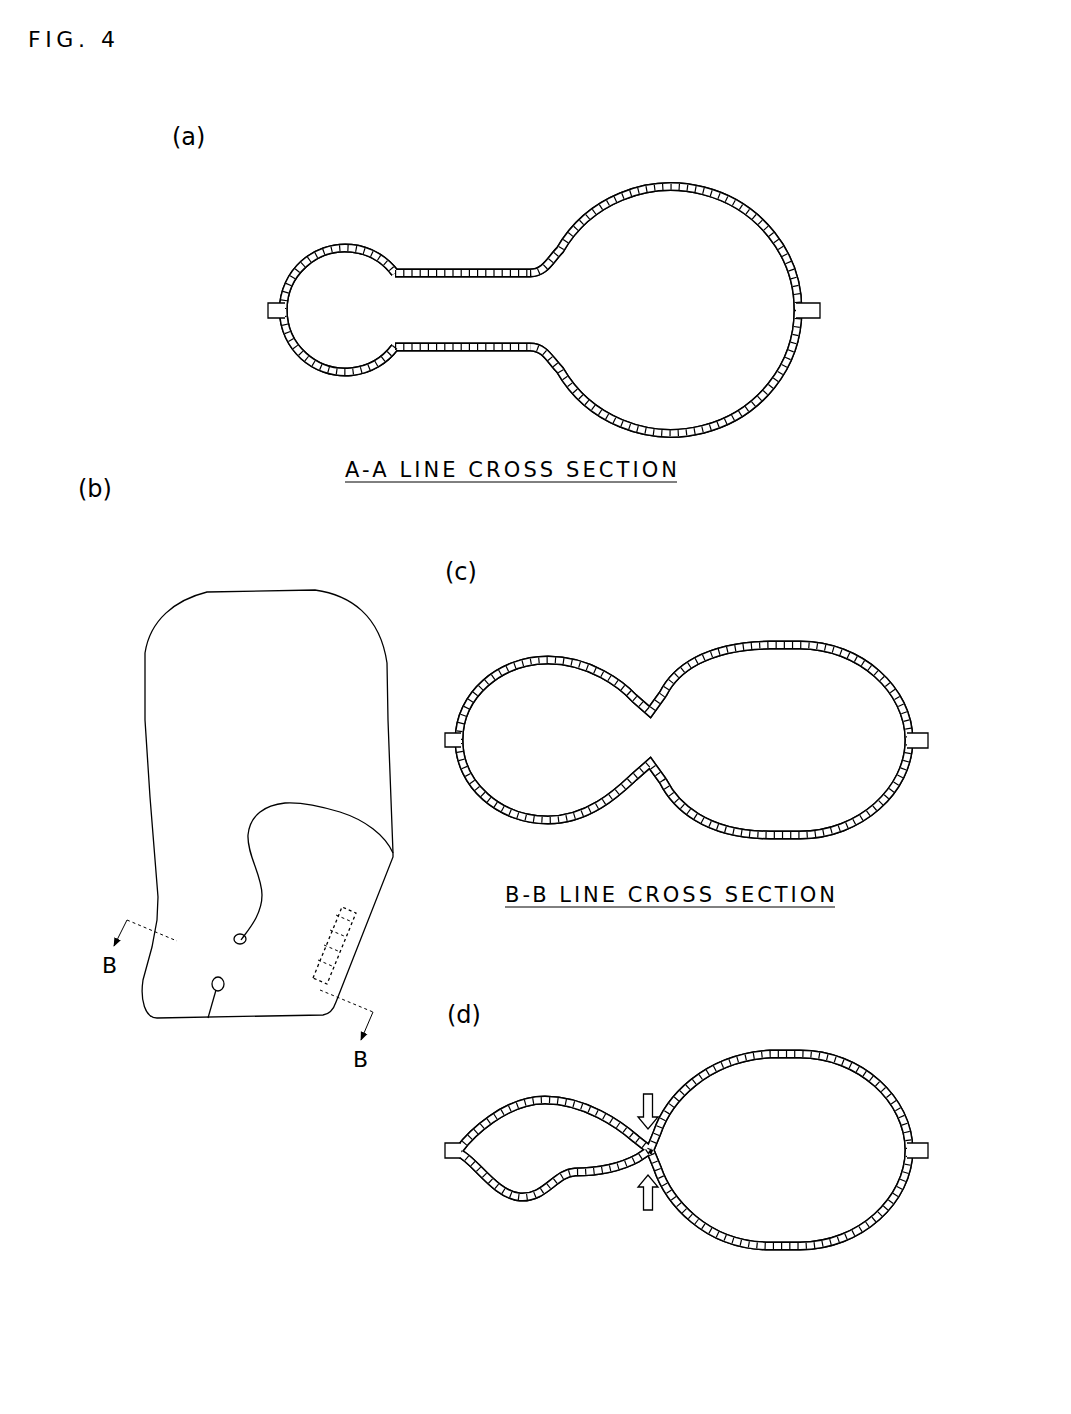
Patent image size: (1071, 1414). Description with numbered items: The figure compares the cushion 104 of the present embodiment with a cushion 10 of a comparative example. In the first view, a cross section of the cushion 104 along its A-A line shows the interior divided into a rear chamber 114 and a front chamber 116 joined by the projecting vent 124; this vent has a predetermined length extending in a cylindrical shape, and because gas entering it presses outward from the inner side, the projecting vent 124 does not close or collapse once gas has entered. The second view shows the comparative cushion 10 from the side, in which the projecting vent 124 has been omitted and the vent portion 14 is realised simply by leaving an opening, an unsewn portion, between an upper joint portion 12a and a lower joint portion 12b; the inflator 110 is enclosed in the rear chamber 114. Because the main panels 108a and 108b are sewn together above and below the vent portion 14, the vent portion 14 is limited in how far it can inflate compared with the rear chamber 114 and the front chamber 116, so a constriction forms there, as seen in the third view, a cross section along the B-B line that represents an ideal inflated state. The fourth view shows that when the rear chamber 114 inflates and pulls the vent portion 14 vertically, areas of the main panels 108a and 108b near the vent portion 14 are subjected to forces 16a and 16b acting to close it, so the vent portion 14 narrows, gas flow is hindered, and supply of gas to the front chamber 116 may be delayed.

The cushion 104 is at (334, 213).
The front chamber 116 is at (310, 286).
The projecting vent 124 is at (530, 259).
The main panel 108b is at (765, 217).
The main panel 108a is at (760, 404).
The rear chamber 114 is at (599, 724).
The cushion 10 is at (150, 603).
The vent portion 14 is at (247, 948).
The upper joint portion 12a is at (267, 893).
The lower joint portion 12b is at (212, 1003).
The inflator 110 is at (362, 953).
The force 16a is at (646, 1212).
The force 16b is at (650, 1092).